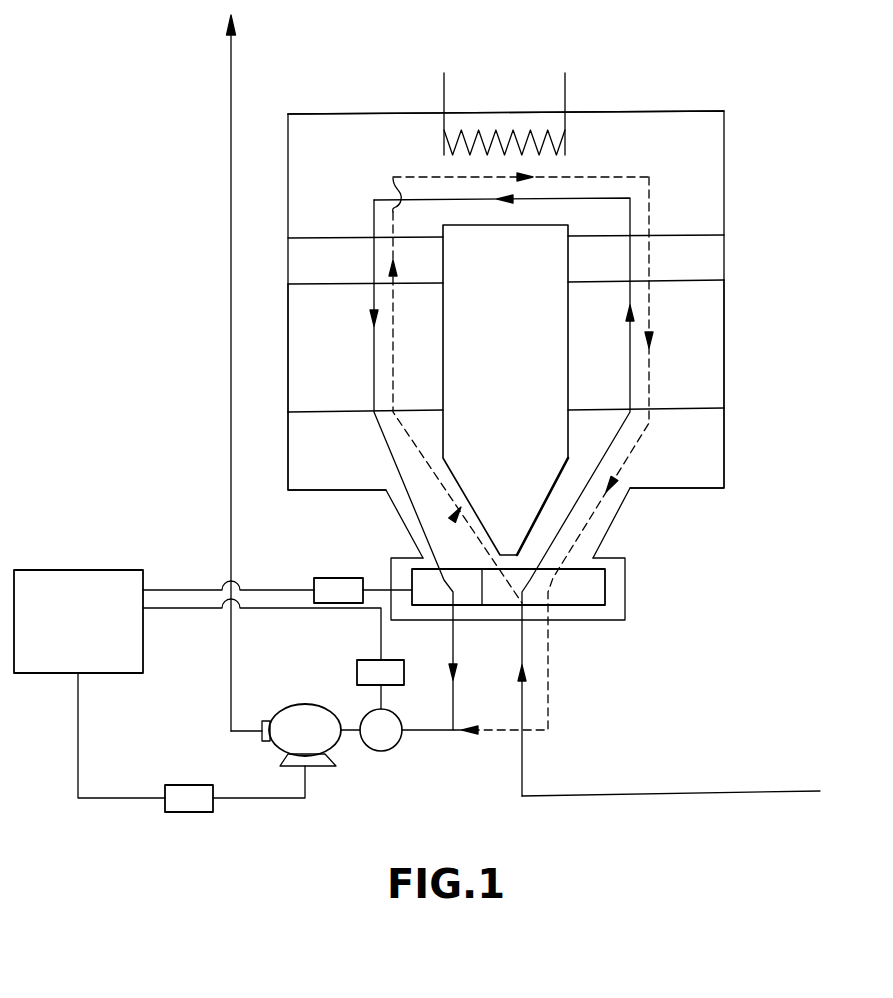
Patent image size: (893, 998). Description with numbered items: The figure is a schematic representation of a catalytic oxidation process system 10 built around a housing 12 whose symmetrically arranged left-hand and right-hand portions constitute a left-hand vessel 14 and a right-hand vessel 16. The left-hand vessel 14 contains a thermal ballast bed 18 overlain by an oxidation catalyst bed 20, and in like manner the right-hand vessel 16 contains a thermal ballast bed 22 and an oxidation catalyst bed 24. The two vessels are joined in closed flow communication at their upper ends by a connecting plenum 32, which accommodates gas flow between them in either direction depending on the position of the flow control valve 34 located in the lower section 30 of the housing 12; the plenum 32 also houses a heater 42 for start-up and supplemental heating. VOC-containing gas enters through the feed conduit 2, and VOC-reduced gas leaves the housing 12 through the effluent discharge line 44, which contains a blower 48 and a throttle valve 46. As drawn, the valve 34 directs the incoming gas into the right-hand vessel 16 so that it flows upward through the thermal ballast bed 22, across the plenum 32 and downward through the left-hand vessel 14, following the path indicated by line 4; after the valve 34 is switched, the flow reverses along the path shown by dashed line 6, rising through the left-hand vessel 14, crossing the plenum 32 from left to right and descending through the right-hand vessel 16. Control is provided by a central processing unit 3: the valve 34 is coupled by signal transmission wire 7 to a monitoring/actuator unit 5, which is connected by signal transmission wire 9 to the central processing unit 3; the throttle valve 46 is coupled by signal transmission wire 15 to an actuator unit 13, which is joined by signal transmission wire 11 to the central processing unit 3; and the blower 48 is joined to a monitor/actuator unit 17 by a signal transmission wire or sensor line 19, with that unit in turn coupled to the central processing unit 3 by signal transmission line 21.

The feed conduit 2 is at (677, 795).
The central processing unit 3 is at (85, 573).
The line 4 is at (582, 198).
The monitoring/actuator unit 5 is at (325, 577).
The dashed line 6 is at (650, 213).
The signal transmission wire 7 is at (378, 585).
The signal transmission wire 9 is at (205, 590).
The catalytic oxidation process system 10 is at (778, 473).
The signal transmission wire 11 is at (160, 612).
The housing 12 is at (675, 488).
The actuator unit 13 is at (365, 660).
The left-hand vessel 14 is at (323, 462).
The signal transmission wire 15 is at (383, 707).
The right-hand vessel 16 is at (705, 415).
The monitor/actuator unit 17 is at (178, 812).
The thermal ballast bed 18 is at (293, 353).
The signal transmission wire or sensor line 19 is at (275, 800).
The oxidation catalyst bed 20 is at (293, 267).
The signal transmission line 21 is at (100, 800).
The thermal ballast bed 22 is at (718, 333).
The oxidation catalyst bed 24 is at (720, 253).
The lower section 30 is at (627, 591).
The connecting plenum 32 is at (363, 115).
The flow control valve 34 is at (570, 598).
The heater 42 is at (497, 132).
The effluent discharge line 44 is at (231, 395).
The throttle valve 46 is at (383, 752).
The blower 48 is at (312, 705).